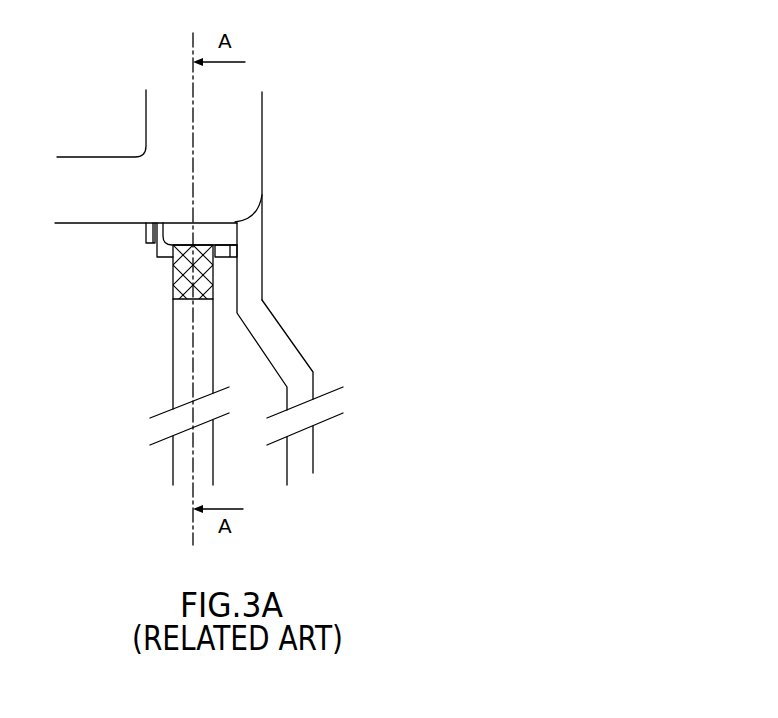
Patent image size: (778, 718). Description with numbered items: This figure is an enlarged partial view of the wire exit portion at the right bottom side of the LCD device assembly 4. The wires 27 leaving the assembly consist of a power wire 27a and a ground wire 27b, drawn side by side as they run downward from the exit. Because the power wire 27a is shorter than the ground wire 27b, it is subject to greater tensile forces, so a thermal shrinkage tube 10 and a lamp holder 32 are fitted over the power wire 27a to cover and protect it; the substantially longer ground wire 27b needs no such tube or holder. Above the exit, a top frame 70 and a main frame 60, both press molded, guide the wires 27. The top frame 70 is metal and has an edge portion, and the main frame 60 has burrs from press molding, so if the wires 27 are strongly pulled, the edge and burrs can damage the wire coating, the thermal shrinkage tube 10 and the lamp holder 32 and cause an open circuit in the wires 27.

The LCD device assembly 4 is at (396, 75).
The top frame 70 is at (245, 128).
The main frame 60 is at (212, 232).
The lamp holder 32 is at (226, 252).
The thermal shrinkage tube 10 is at (208, 272).
The wires 27 is at (289, 354).
The power wire 27a is at (205, 372).
The ground wire 27b is at (283, 340).